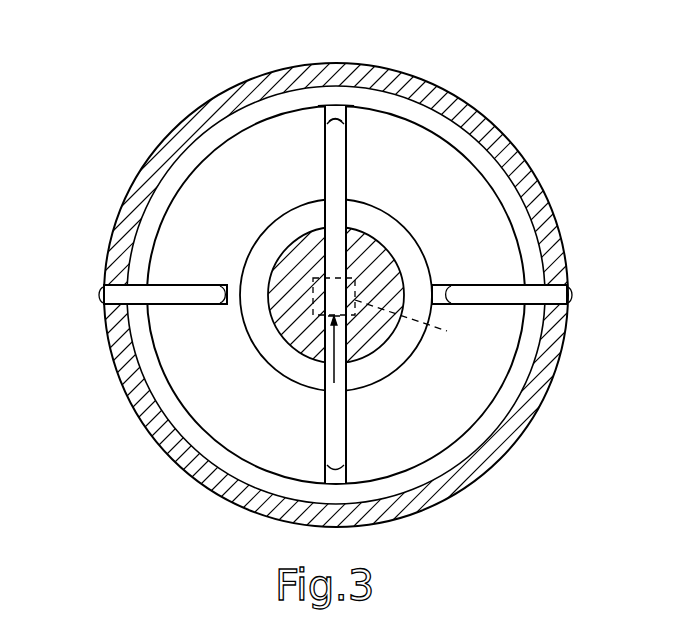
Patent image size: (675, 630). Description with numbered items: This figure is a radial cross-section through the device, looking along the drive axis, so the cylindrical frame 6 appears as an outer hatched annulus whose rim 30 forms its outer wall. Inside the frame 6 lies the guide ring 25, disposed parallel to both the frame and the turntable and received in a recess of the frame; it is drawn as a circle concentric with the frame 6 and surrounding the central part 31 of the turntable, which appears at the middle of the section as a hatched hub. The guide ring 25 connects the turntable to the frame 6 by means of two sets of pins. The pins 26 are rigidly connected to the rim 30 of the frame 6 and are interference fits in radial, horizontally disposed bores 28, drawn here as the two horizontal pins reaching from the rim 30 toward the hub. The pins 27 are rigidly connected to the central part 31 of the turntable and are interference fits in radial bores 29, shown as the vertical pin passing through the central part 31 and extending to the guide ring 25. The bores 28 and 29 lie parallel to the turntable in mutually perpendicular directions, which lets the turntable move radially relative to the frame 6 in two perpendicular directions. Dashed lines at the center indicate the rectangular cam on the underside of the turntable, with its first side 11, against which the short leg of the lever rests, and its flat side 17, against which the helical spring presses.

The frame 6 is at (222, 486).
The first side of cam 11 is at (313, 299).
The flat side of cam 17 is at (414, 320).
The guide ring 25 is at (276, 123).
The pins 26 is at (114, 312).
The pins 27 is at (350, 135).
The bores 28 is at (187, 281).
The bores 29 is at (350, 153).
The rim of frame 30 is at (101, 300).
The central part of turntable 31 is at (337, 110).